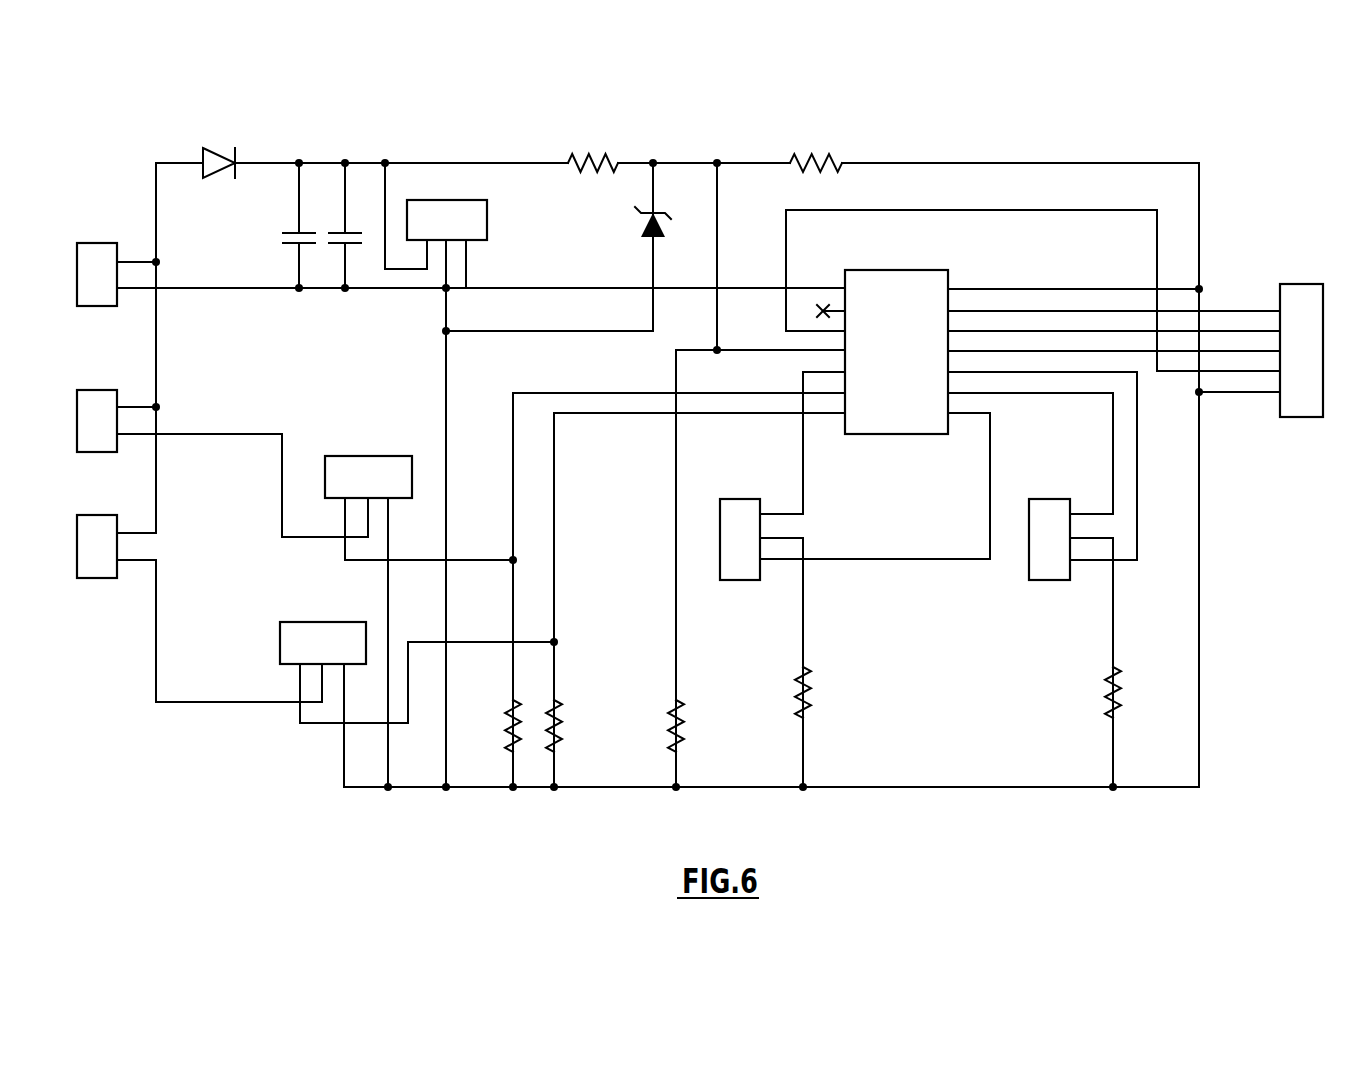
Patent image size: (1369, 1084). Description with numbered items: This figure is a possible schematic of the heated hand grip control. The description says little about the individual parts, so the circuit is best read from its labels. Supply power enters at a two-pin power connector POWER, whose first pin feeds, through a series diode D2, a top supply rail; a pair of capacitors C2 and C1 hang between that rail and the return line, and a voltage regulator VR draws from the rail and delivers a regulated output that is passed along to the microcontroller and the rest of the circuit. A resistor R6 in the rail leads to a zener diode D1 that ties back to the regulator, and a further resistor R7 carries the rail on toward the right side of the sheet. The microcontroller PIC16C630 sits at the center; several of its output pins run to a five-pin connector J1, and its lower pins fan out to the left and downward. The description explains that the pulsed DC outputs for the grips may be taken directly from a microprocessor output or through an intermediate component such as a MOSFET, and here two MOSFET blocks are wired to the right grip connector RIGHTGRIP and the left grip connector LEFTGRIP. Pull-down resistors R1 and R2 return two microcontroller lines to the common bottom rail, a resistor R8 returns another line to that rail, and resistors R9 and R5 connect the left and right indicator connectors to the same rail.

The power connector CONN02 POWER is at (96, 268).
The right grip connector CONN02 RIGHTGRIP is at (96, 415).
The left grip connector CONN02 LEFTGRIP is at (96, 577).
The diode D2 is at (221, 172).
The capacitor C2 is at (308, 186).
The capacitor C1 is at (357, 188).
The 7805 voltage regulator VR is at (466, 204).
The resistor R6 is at (582, 150).
The resistor R7 is at (798, 150).
The zener diode D1 is at (601, 245).
The microcontroller CONN14U PIC16C630 is at (897, 354).
The connector CONN05 J1 is at (1301, 352).
The resistor 10K R1 is at (502, 705).
The resistor 10K R2 is at (578, 705).
The resistor 100K R8 is at (710, 708).
The resistor R9 is at (802, 679).
The resistor R5 is at (1111, 679).